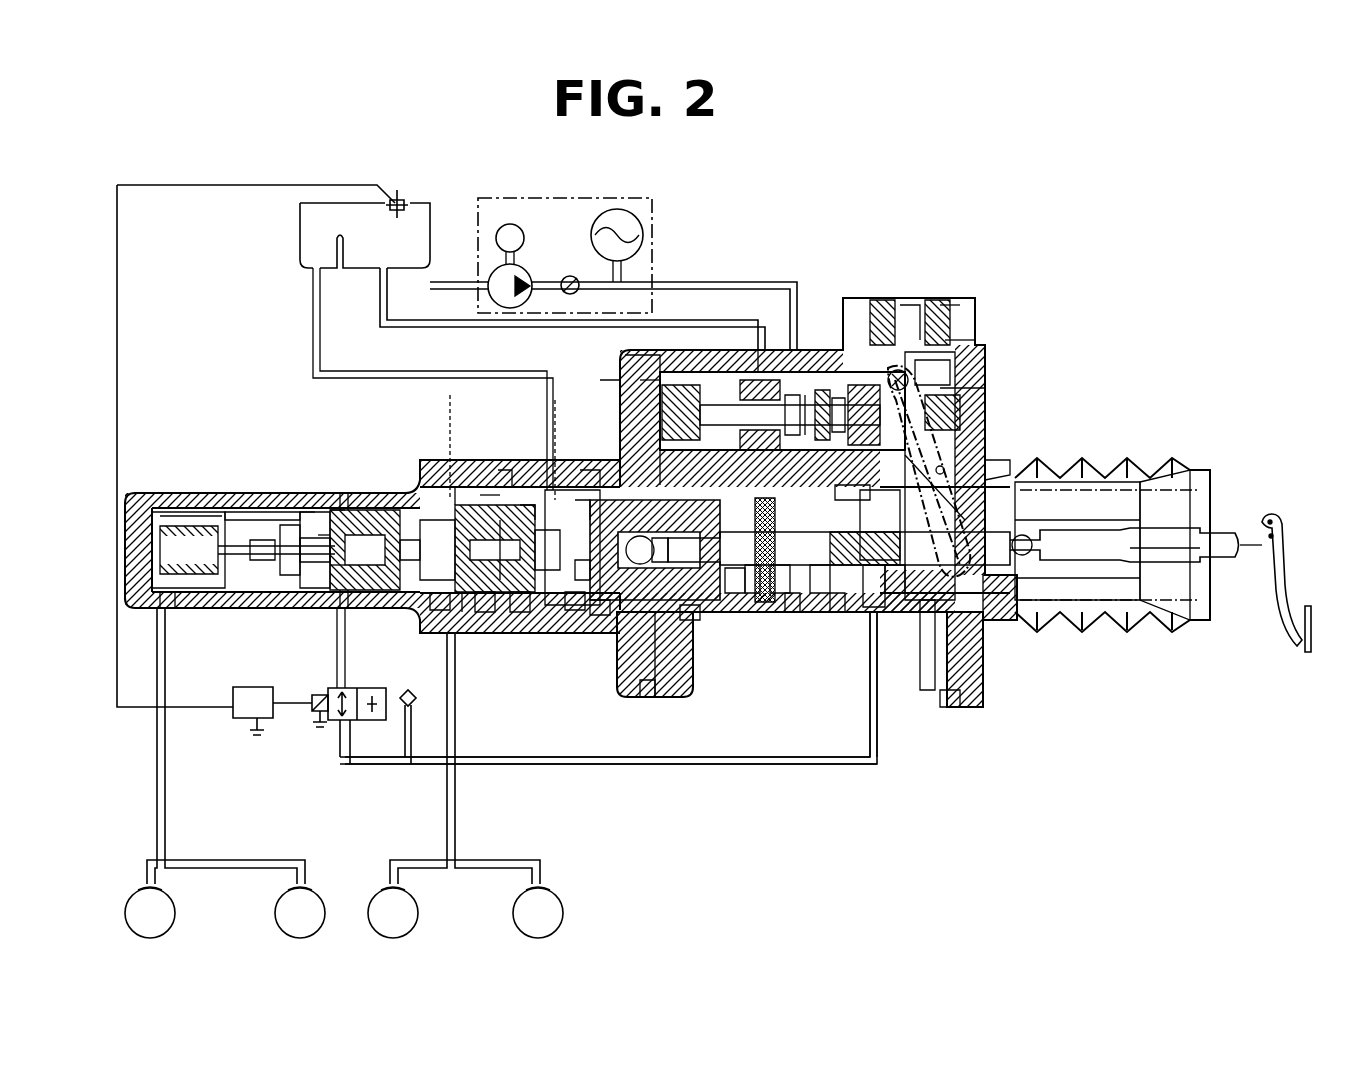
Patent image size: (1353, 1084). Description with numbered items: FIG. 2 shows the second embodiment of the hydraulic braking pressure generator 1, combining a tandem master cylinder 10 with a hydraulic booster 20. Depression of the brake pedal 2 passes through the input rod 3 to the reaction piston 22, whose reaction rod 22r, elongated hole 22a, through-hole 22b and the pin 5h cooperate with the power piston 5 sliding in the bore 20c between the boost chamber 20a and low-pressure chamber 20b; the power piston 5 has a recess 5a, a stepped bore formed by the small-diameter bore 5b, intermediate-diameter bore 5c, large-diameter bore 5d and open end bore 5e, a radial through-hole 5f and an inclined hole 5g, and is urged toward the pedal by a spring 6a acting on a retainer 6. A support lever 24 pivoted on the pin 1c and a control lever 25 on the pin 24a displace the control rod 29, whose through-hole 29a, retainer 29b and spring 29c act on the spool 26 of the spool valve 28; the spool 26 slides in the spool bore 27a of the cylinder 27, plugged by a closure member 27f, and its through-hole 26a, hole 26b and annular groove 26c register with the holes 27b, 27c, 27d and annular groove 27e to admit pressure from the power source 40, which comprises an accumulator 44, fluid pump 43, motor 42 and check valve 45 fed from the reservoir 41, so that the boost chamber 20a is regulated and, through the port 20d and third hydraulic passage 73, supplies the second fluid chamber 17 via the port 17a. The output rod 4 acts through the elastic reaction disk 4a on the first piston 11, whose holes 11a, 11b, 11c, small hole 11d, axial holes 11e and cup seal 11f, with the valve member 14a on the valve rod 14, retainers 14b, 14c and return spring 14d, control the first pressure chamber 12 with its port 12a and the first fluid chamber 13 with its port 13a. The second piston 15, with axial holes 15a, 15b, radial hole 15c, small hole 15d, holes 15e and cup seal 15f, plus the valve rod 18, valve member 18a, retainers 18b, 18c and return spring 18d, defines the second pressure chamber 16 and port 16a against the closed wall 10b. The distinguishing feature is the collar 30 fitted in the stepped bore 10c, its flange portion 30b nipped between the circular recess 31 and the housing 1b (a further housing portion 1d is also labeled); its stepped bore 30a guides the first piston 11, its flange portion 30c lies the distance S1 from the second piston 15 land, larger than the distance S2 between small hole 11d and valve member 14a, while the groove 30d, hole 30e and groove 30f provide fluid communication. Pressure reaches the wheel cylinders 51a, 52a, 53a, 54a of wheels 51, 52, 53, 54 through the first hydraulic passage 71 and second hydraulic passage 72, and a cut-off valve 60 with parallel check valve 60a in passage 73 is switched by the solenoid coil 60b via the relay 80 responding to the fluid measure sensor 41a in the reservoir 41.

The hydraulic braking pressure generator 1 is at (1085, 462).
The housing 1b is at (975, 312).
The pin 1c is at (950, 348).
The mounting flange 1d is at (978, 690).
The brake pedal 2 is at (1283, 626).
The input rod 3 is at (1180, 562).
The output rod 4 is at (693, 630).
The reaction disk 4a is at (690, 572).
The power piston 5 is at (740, 570).
The recess 5a is at (732, 595).
The small-diameter bore 5b is at (760, 595).
The intermediate-diameter bore 5c is at (790, 612).
The large-diameter bore 5d is at (895, 595).
The open end bore 5e is at (1050, 602).
The through-hole 5f is at (1000, 622).
The inclined hole 5g is at (780, 600).
The pin 5h is at (875, 598).
The retainer 6 is at (1160, 625).
The spring 6a is at (1130, 615).
The tandem master cylinder 10 is at (393, 486).
The closed wall 10b is at (125, 575).
The bore 10c is at (412, 495).
The first piston 11 is at (625, 605).
The hole 11a is at (580, 580).
The hole 11b is at (647, 700).
The hole 11c is at (600, 615).
The small hole 11d is at (575, 610).
The axial holes 11e is at (585, 470).
The cup seal 11f is at (580, 500).
The first pressure chamber 12 is at (500, 590).
The port 12a is at (440, 605).
The first fluid chamber 13 is at (600, 490).
The port 13a is at (548, 470).
The valve rod 14 is at (512, 580).
The valve member 14a is at (542, 575).
The retainer 14b is at (445, 518).
The retainer 14c is at (522, 505).
The return spring 14d is at (490, 495).
The second piston 15 is at (370, 580).
The axial hole 15a is at (275, 572).
The axial hole 15b is at (400, 582).
The radial hole 15c is at (330, 512).
The axial small hole 15d is at (328, 568).
The axial holes 15e is at (322, 535).
The cup seal 15f is at (300, 515).
The second pressure chamber 16 is at (200, 575).
The port 16a is at (165, 602).
The second fluid chamber 17 is at (345, 508).
The port 17a is at (338, 618).
The valve rod 18 is at (215, 590).
The valve member 18a is at (245, 575).
The retainer 18b is at (195, 525).
The retainer 18c is at (268, 530).
The return spring 18d is at (225, 512).
The hydraulic booster 20 is at (985, 376).
The boost chamber 20a is at (932, 372).
The low-pressure chamber 20b is at (862, 505).
The bore 20c is at (820, 600).
The port 20d is at (875, 762).
The reaction piston 22 is at (840, 612).
The elongated hole 22a is at (925, 622).
The through-hole 22b is at (950, 700).
The reaction rod 22r is at (833, 612).
The support lever 24 is at (935, 440).
The pin 24a is at (915, 458).
The control lever 25 is at (1000, 462).
The spool 26 is at (760, 395).
The through-hole 26a is at (862, 385).
The hole 26b is at (840, 398).
The annular groove 26c is at (822, 390).
The cylinder 27 is at (720, 405).
The spool bore 27a is at (690, 385).
The hole 27b is at (752, 372).
The hole 27c is at (790, 395).
The hole 27d is at (842, 490).
The annular groove 27e is at (807, 395).
The closure member 27f is at (650, 380).
The spool valve 28 is at (640, 372).
The control rod 29 is at (960, 405).
The through-hole 29a is at (945, 395).
The retainer 29b is at (952, 300).
The spring 29c is at (908, 305).
The collar 30 is at (468, 500).
The stepped bore 30a is at (522, 612).
The circular flange portion 30b is at (690, 620).
The circular flange portion 30c is at (485, 612).
The circular groove 30d is at (505, 478).
The hole 30e is at (610, 380).
The groove 30f is at (468, 610).
The circular recess 31 is at (662, 660).
The power source 40 is at (652, 240).
The reservoir 41 is at (300, 245).
The fluid measure sensor 41a is at (398, 196).
The motor 42 is at (512, 224).
The fluid pump 43 is at (530, 278).
The accumulator 44 is at (605, 212).
The check valve 45 is at (570, 276).
The front wheel 51 is at (176, 913).
The wheel cylinder 51a is at (165, 890).
The front wheel 52 is at (326, 913).
The wheel cylinder 52a is at (310, 886).
The rear wheel 53 is at (419, 913).
The wheel cylinder 53a is at (408, 888).
The rear wheel 54 is at (564, 913).
The wheel cylinder 54a is at (550, 886).
The cut-off valve 60 is at (343, 726).
The check valve 60a is at (409, 708).
The solenoid coil 60b is at (315, 712).
The first hydraulic passage 71 is at (455, 828).
The second hydraulic passage 72 is at (165, 828).
The third hydraulic passage 73 is at (640, 766).
The relay 80 is at (235, 718).
The distance S1 is at (458, 416).
The distance S2 is at (540, 410).